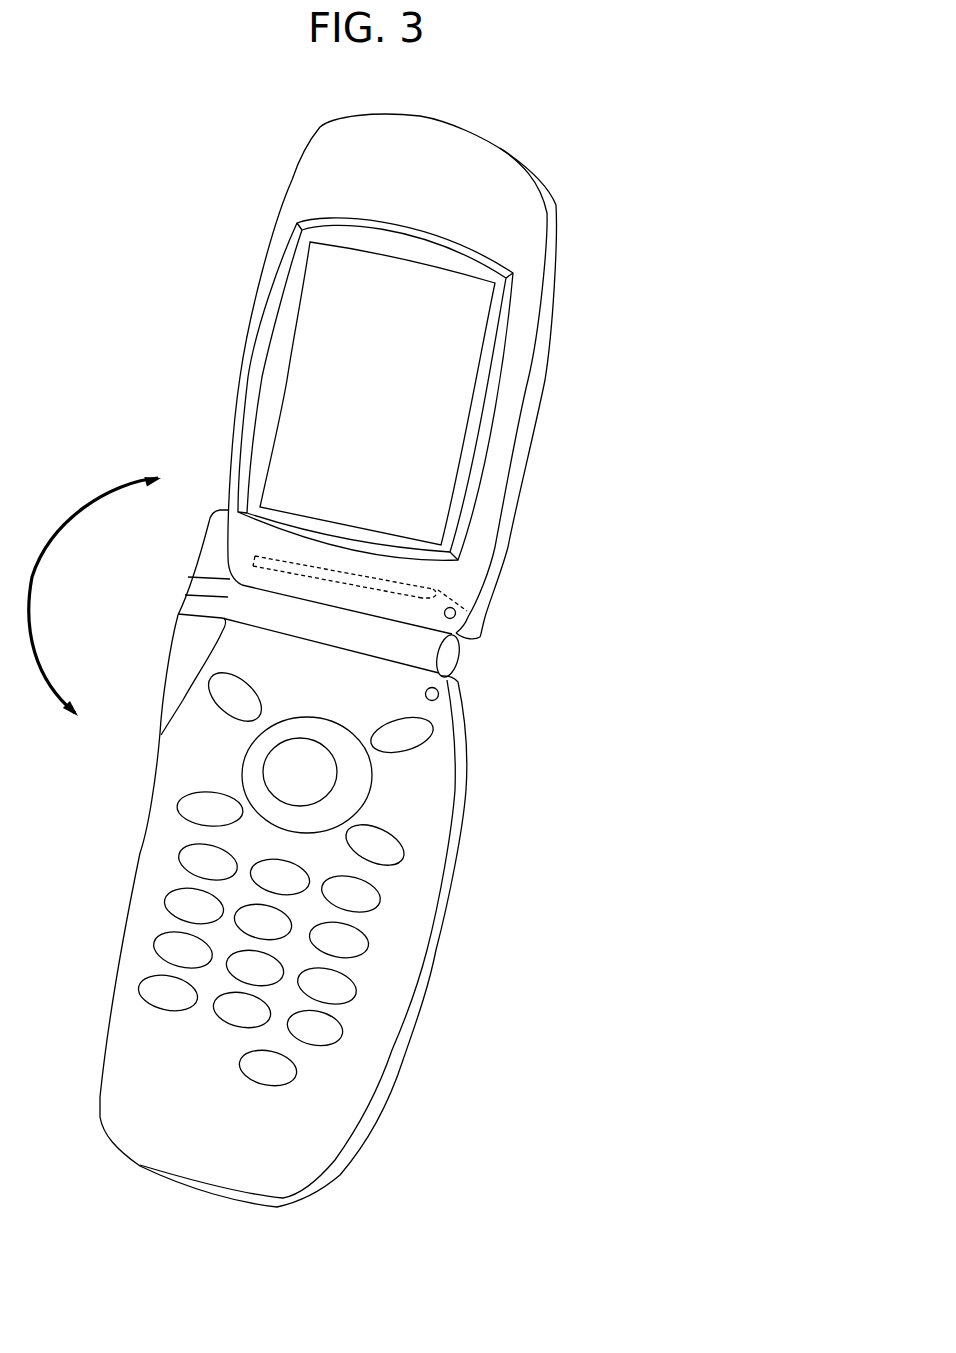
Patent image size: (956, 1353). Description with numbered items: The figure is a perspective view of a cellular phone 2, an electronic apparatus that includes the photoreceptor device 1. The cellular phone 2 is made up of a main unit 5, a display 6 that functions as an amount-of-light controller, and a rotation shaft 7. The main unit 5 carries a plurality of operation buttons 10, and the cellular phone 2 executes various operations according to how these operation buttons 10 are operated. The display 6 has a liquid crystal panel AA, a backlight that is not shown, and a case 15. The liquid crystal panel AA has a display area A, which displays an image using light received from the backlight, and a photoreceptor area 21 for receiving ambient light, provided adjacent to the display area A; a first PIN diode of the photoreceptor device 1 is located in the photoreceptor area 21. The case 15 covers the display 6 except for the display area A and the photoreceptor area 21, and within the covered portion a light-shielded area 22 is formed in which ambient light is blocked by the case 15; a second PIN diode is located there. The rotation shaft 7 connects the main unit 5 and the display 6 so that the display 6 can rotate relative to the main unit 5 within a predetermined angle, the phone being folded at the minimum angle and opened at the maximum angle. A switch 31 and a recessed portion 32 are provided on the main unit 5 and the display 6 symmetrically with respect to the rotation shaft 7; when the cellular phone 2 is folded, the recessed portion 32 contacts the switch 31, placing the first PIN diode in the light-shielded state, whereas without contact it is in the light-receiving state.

The photoreceptor device 1 is at (650, 495).
The cellular phone 2 is at (609, 211).
The main unit 5 is at (118, 833).
The display 6 is at (225, 311).
The rotation shaft 7 is at (247, 605).
The operation buttons 10 is at (310, 768).
The case 15 is at (525, 270).
The photoreceptor area 21 is at (457, 560).
The light-shielded area 22 is at (470, 617).
The switch 31 is at (448, 694).
The recessed portion 32 is at (480, 637).
The display area A is at (430, 475).
The liquid crystal panel AA is at (489, 379).